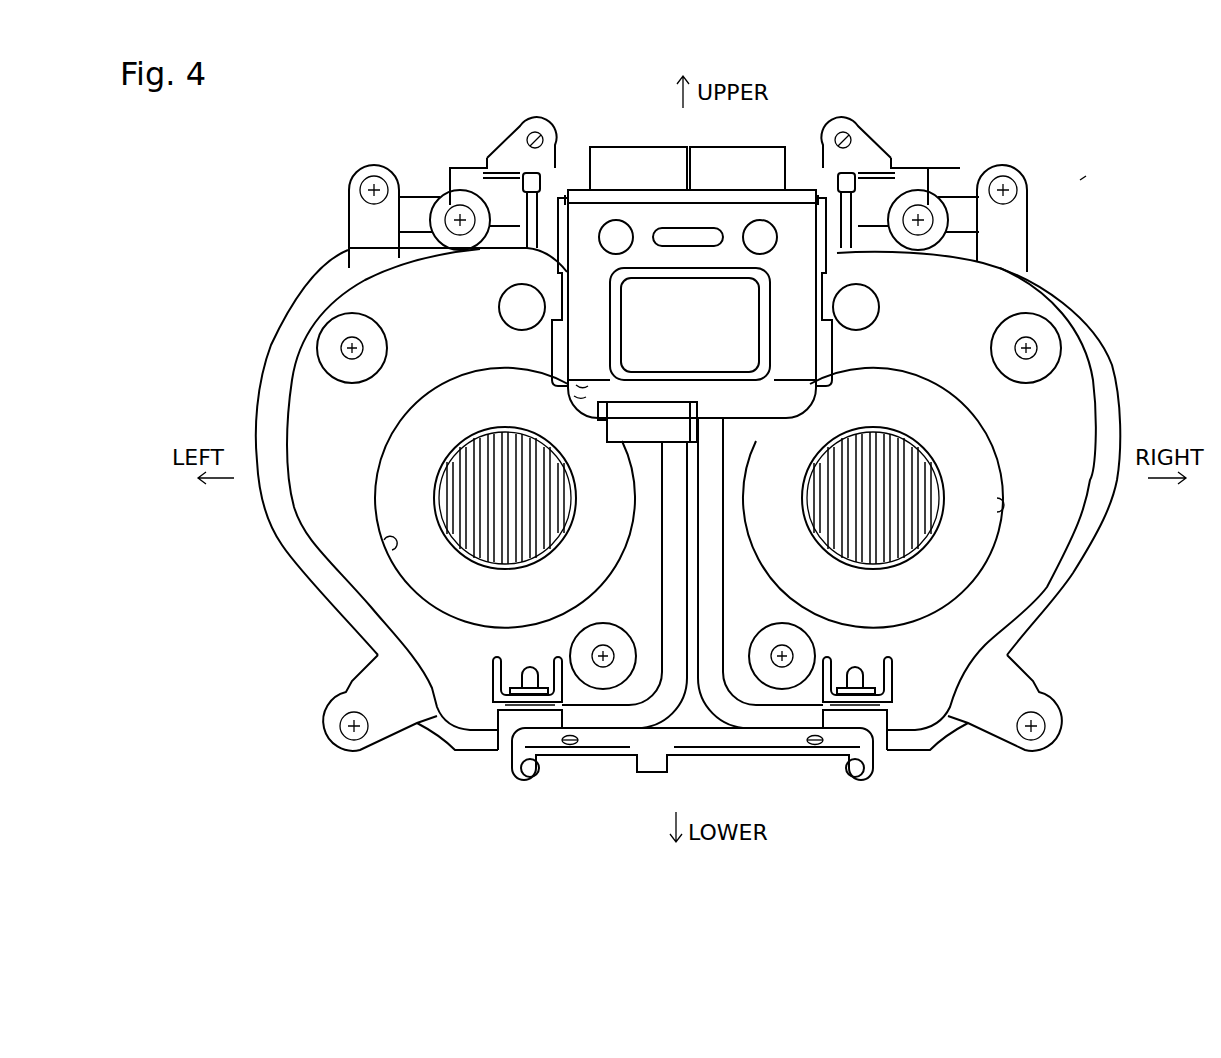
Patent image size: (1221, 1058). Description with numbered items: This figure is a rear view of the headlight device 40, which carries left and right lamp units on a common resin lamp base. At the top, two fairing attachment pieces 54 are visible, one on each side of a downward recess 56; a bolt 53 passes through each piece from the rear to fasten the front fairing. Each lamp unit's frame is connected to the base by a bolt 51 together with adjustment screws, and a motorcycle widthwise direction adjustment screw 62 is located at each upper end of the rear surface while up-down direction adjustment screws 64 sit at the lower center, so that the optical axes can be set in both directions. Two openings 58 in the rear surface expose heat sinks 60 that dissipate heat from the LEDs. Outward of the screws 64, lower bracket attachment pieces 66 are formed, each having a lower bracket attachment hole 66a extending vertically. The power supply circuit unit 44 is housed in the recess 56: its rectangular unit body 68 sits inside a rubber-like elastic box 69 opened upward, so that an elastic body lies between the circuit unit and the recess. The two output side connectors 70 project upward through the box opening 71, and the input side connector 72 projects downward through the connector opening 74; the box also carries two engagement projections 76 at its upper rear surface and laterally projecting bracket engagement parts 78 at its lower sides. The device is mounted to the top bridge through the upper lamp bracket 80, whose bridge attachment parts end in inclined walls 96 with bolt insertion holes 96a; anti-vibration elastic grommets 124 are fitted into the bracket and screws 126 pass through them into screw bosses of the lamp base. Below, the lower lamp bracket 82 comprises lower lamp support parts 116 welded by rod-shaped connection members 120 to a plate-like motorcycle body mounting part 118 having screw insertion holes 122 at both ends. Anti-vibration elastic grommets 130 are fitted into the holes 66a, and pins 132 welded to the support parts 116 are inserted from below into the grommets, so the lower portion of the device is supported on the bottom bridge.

The headlight device 40 is at (1088, 170).
The power supply circuit unit 44 is at (603, 142).
The bolt 51 is at (517, 303).
The bolt 53 is at (368, 190).
The fairing attachment piece 54 is at (352, 175).
The recess 56 is at (807, 300).
The opening 58 is at (462, 548).
The heat sink 60 is at (405, 575).
The motorcycle widthwise direction adjustment screw 62 is at (350, 348).
The up-down direction adjustment screw 64 is at (606, 660).
The lower bracket attachment piece 66 is at (528, 672).
The lower bracket attachment hole 66a is at (532, 697).
The unit body 68 is at (585, 190).
The box 69 is at (585, 397).
The output side connector 70 is at (663, 173).
The box opening 71 is at (530, 182).
The input side connector 72 is at (680, 432).
The connector opening 74 is at (612, 428).
The engagement projection 76 is at (616, 235).
The bracket engagement part 78 is at (582, 385).
The upper lamp bracket 80 is at (928, 155).
The lower lamp bracket 82 is at (783, 771).
The inclined wall 96 is at (533, 138).
The bolt insertion hole 96a is at (525, 148).
The lower lamp support part 116 is at (515, 718).
The motorcycle body mounting part 118 is at (695, 752).
The connection member 120 is at (533, 778).
The screw insertion hole 122 is at (578, 742).
The anti-vibration elastic grommet 124 is at (440, 212).
The screw 126 is at (450, 207).
The anti-vibration elastic grommet 130 is at (527, 720).
The pin 132 is at (495, 700).